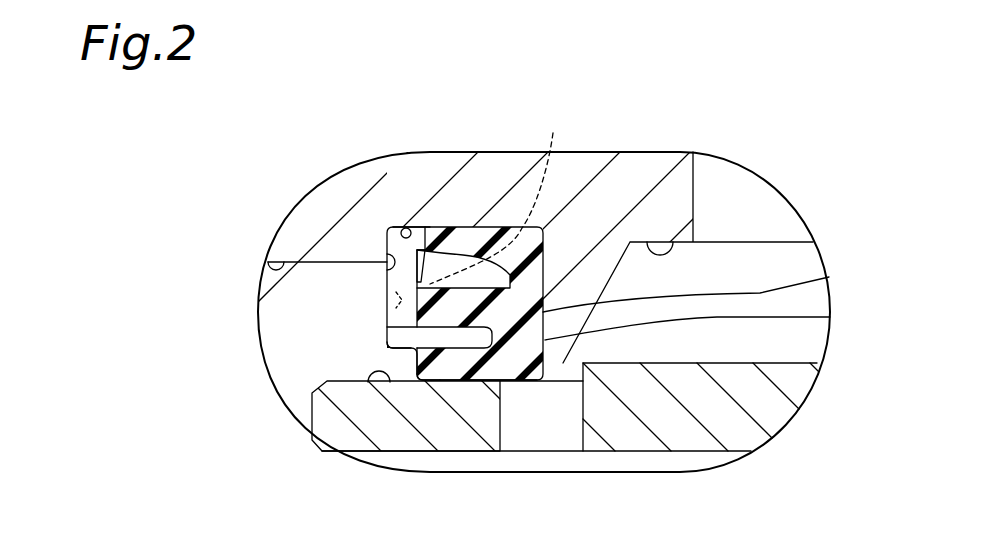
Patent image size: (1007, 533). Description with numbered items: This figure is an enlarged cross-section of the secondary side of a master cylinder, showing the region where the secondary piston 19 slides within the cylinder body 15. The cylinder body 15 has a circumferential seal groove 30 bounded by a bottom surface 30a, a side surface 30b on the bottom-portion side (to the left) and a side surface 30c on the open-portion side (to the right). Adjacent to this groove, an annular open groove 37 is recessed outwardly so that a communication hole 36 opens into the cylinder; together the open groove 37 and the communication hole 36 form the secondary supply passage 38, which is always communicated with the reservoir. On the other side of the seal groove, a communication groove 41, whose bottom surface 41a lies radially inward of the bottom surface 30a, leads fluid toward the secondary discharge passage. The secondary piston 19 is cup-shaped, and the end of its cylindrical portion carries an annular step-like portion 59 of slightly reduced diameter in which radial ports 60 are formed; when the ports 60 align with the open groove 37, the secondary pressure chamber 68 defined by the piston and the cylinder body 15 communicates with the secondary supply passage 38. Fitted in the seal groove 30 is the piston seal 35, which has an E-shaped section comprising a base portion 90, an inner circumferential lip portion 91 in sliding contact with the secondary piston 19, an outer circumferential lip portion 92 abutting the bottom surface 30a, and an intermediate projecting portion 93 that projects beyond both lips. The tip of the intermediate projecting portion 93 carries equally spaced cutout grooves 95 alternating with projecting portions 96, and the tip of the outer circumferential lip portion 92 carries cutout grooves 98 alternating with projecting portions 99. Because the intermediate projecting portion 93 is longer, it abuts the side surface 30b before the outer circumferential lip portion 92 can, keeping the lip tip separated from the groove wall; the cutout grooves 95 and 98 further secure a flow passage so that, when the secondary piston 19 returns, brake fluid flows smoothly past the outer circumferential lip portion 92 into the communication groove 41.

The cylinder body 15 is at (305, 215).
The secondary piston 19 is at (671, 435).
The circumferential seal groove 30 is at (480, 226).
The bottom surface of the circumferential seal groove 30a is at (397, 226).
The side surface of the circumferential seal groove on the bottom portion side 30b is at (405, 302).
The side surface of the circumferential seal groove on the open portion side 30c is at (830, 317).
The piston seal 35 is at (470, 383).
The communication hole 36 is at (693, 197).
The open groove 37 is at (672, 240).
The secondary supply passage 38 is at (767, 200).
The communication groove 41 is at (385, 266).
The bottom surface of the communication groove 41a is at (299, 268).
The annular step-like portion 59 is at (369, 382).
The ports 60 is at (568, 425).
The secondary pressure chamber 68 is at (307, 420).
The base portion 90 is at (829, 277).
The inner circumferential lip portion 91 is at (426, 374).
The outer circumferential lip portion 92 is at (437, 226).
The intermediate projecting portion 93 is at (390, 320).
The cutout grooves 95 is at (500, 196).
The projecting portions 96 is at (385, 325).
The cutout grooves 98 is at (386, 230).
The projecting portions 99 is at (397, 305).